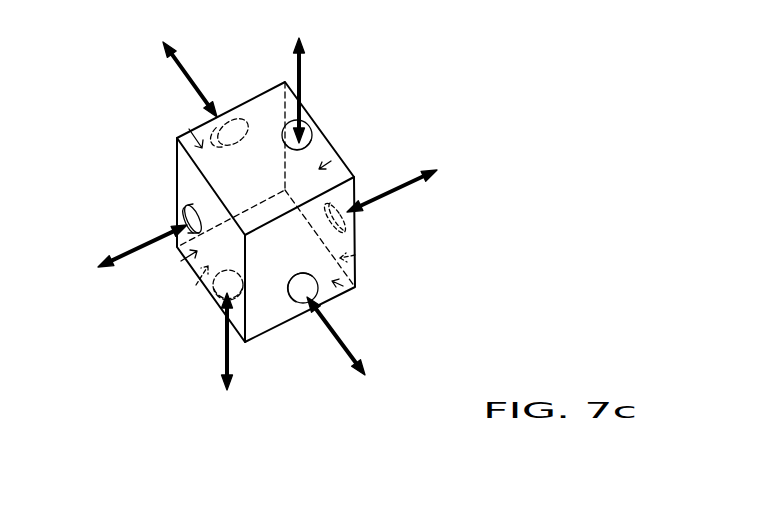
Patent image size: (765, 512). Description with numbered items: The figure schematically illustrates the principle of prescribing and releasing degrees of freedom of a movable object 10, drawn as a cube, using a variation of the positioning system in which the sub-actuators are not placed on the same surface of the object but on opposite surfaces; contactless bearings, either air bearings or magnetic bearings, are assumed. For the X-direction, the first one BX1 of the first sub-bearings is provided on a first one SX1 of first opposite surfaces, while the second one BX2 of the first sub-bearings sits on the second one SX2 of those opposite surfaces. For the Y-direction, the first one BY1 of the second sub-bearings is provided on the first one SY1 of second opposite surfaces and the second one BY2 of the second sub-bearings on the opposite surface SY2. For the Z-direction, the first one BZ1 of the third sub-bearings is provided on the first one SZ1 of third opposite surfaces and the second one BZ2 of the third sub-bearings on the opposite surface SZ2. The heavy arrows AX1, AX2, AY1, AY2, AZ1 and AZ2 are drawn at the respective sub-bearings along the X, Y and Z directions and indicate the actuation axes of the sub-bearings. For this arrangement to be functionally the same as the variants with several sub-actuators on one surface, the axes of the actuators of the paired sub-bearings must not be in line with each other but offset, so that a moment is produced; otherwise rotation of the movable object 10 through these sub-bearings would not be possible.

The movable object 10 is at (185, 169).
The acceleration axis X1 arrow AX1 is at (357, 348).
The acceleration axis X2 arrow AX2 is at (176, 67).
The acceleration axis Y1 arrow AY1 is at (121, 254).
The acceleration axis Y2 arrow AY2 is at (415, 185).
The acceleration axis Z1 arrow AZ1 is at (307, 78).
The acceleration axis Z2 arrow AZ2 is at (229, 358).
The first one of the first sub-bearings BX1 is at (301, 303).
The second one of the first sub-bearings BX2 is at (232, 118).
The first one of the second sub-bearings BY1 is at (187, 207).
The second one of the second sub-bearings BY2 is at (345, 224).
The first one of the third sub-bearings BZ1 is at (316, 122).
The second one of the third sub-bearings BZ2 is at (213, 295).
The first one of the first opposite surfaces SX1 is at (345, 289).
The second one of the first opposite surfaces SX2 is at (189, 129).
The first one of the second opposite surfaces SY1 is at (181, 261).
The second one of the second opposite surfaces SY2 is at (355, 255).
The first one of the third opposite surfaces SZ1 is at (333, 160).
The second one of the third opposite surfaces SZ2 is at (196, 285).